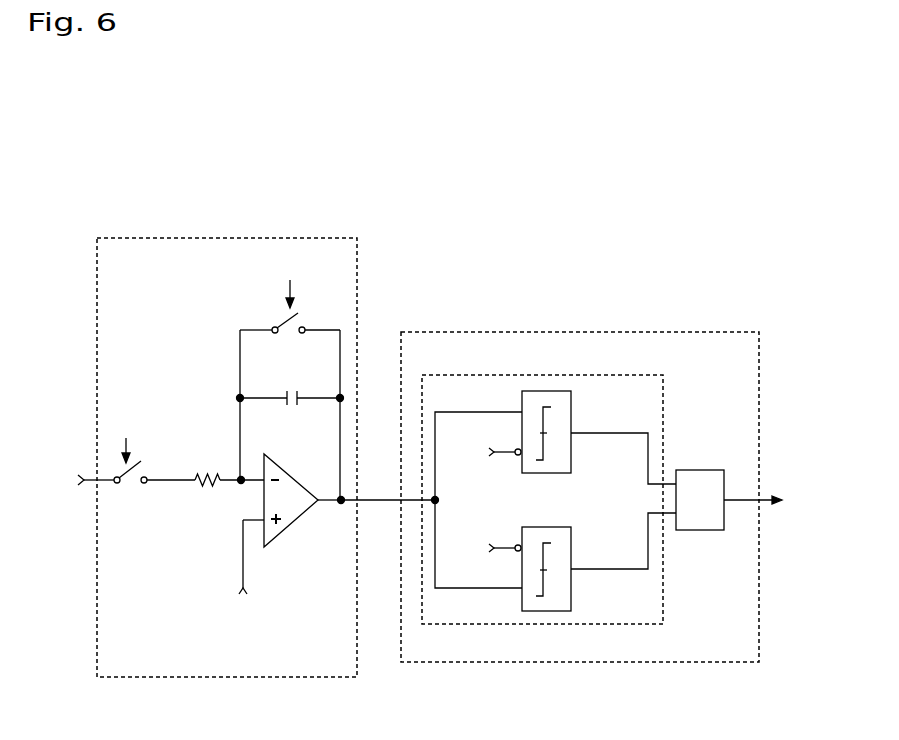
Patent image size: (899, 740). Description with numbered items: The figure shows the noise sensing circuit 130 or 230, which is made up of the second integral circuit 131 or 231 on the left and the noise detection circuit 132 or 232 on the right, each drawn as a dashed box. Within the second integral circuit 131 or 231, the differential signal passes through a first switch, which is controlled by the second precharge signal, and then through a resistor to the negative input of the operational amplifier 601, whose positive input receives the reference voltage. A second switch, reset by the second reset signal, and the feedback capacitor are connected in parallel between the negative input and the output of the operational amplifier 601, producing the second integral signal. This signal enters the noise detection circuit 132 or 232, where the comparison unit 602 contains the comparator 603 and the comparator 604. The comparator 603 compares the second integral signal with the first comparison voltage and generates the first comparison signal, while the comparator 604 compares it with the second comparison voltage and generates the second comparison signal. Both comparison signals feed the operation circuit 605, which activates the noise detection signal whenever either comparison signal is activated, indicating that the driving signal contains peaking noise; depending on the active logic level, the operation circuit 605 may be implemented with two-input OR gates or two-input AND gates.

The noise sensing circuit 130 is at (430, 390).
The noise sensing circuit 230 is at (430, 390).
The second integral circuit 131 is at (198, 435).
The second integral circuit 231 is at (228, 238).
The noise detection circuit 132 is at (611, 473).
The noise detection circuit 232 is at (560, 332).
The operational amplifier 601 is at (289, 527).
The comparison unit 602 is at (568, 376).
The comparator 603 is at (572, 407).
The comparator 604 is at (572, 592).
The operation circuit 605 is at (698, 469).